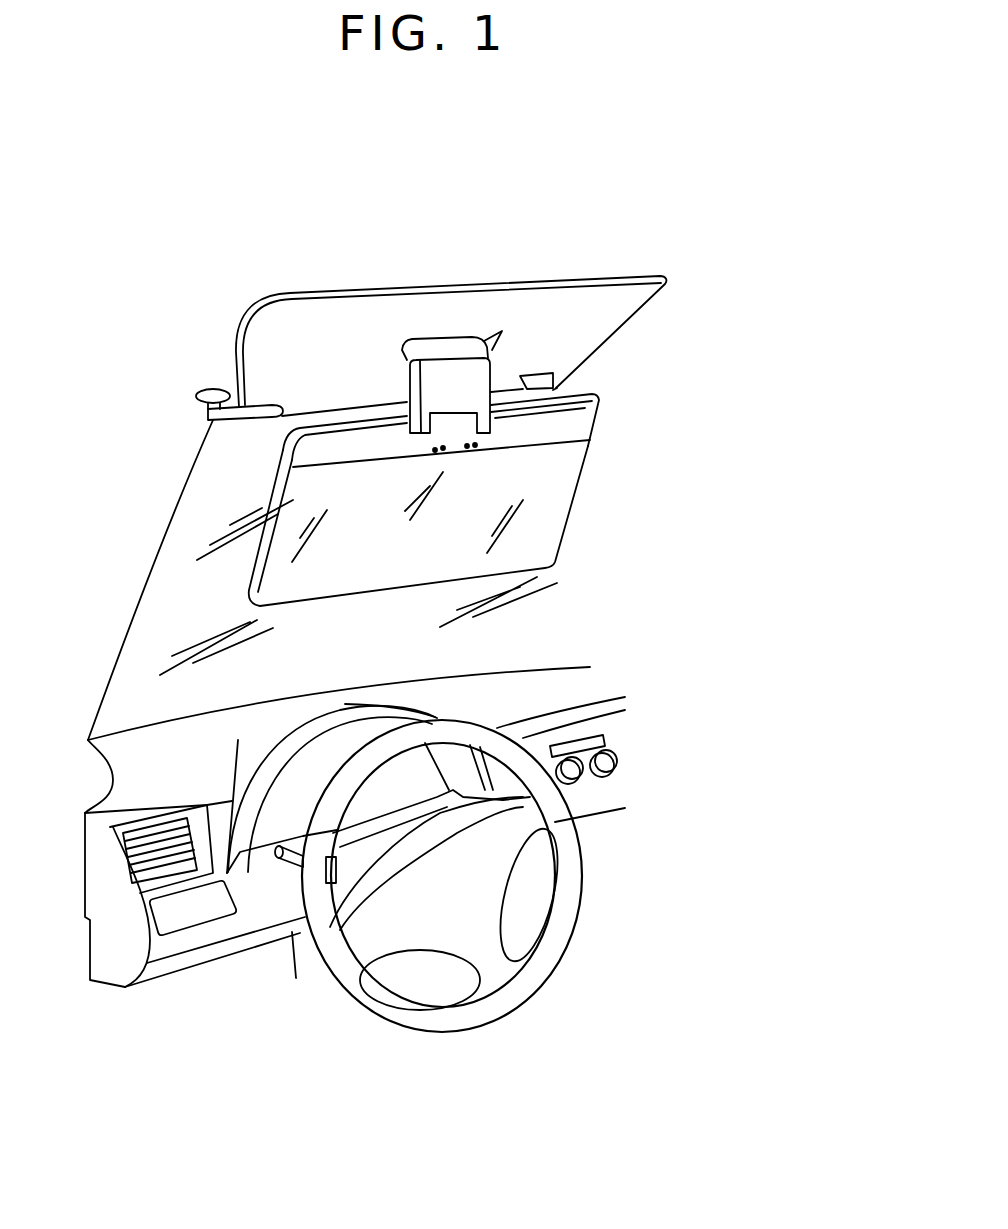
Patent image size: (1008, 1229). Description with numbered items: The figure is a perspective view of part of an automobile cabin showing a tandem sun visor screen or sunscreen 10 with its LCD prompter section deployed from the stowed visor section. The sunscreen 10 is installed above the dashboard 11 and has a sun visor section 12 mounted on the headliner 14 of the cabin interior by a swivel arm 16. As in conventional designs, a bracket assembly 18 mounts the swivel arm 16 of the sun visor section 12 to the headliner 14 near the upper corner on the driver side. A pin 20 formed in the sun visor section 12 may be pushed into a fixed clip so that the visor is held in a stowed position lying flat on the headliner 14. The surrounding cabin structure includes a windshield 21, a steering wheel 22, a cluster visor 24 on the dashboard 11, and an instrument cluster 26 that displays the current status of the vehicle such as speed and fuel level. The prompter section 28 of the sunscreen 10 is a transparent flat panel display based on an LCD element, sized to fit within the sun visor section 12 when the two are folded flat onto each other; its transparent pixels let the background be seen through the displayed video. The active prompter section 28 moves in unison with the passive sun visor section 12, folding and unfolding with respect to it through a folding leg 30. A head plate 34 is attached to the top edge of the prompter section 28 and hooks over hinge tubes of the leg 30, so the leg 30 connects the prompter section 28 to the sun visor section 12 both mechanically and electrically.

The tandem sun visor screen 10 is at (690, 327).
The dashboard 11 is at (537, 680).
The sun visor section 12 is at (466, 291).
The headliner 14 is at (192, 378).
The swivel arm 16 is at (208, 413).
The bracket assembly 18 is at (210, 390).
The pin 20 is at (567, 386).
The windshield 21 is at (180, 577).
The steering wheel 22 is at (563, 913).
The cluster visor 24 is at (237, 783).
The instrument cluster 26 is at (260, 825).
The prompter section 28 is at (587, 497).
The folding leg 30 is at (495, 368).
The head plate 34 is at (577, 423).